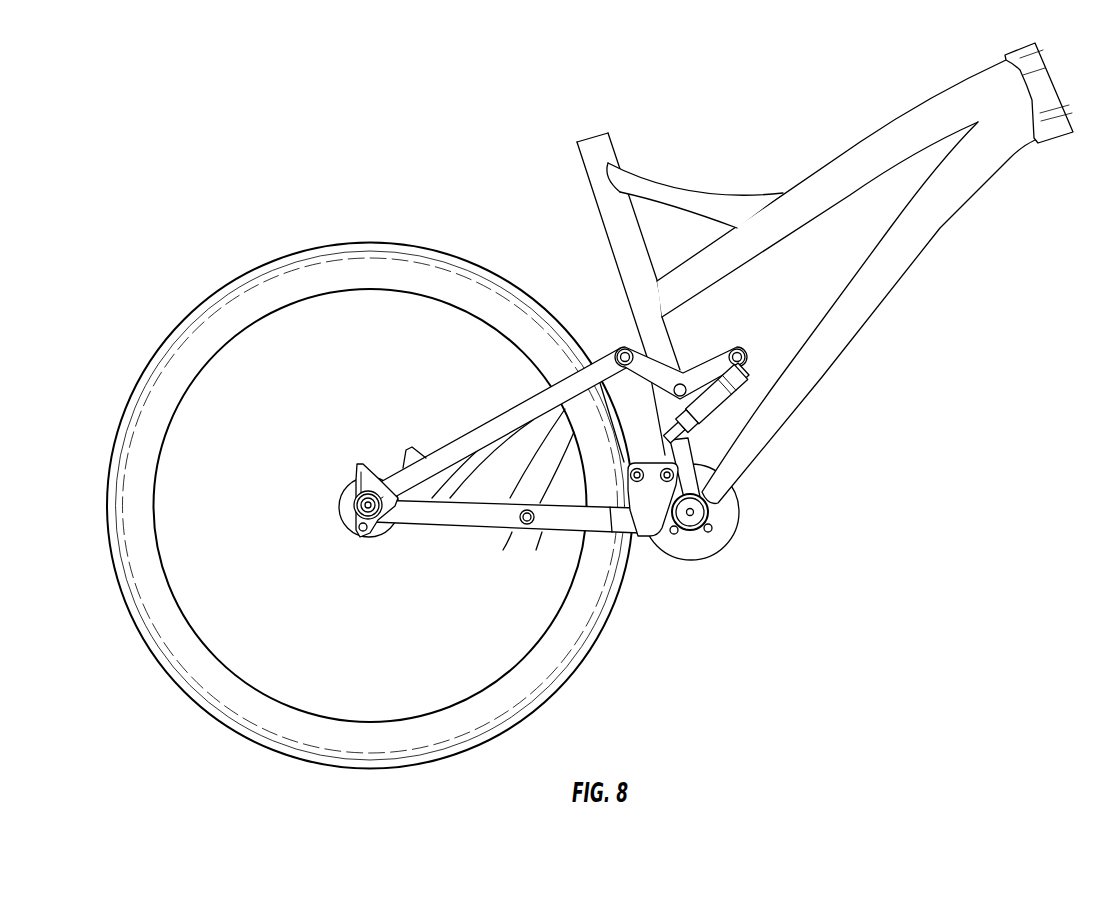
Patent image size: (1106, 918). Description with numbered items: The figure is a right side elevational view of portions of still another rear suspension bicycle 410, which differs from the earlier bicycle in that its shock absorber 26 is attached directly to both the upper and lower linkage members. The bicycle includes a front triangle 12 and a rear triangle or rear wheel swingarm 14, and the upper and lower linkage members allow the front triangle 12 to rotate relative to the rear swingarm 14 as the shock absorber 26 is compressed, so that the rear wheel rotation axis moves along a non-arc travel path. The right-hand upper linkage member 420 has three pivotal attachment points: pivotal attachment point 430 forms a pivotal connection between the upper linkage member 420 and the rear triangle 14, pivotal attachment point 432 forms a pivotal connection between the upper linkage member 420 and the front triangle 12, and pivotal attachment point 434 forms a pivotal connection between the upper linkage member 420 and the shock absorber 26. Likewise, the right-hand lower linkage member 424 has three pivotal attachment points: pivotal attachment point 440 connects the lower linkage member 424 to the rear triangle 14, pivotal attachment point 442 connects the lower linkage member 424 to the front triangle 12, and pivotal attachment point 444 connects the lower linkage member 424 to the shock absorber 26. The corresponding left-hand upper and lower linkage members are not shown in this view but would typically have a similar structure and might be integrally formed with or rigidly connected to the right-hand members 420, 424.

The bicycle 410 is at (538, 95).
The front triangle 12 is at (880, 378).
The rear triangle 14 is at (489, 590).
The shock absorber 26 is at (714, 415).
The upper linkage member 420 is at (686, 368).
The lower linkage member 424 is at (560, 536).
The pivotal attachment point 430 is at (621, 349).
The pivotal attachment point 432 is at (674, 393).
The pivotal attachment point 434 is at (739, 349).
The pivotal attachment point 440 is at (527, 526).
The pivotal attachment point 442 is at (700, 468).
The pivotal attachment point 444 is at (638, 467).